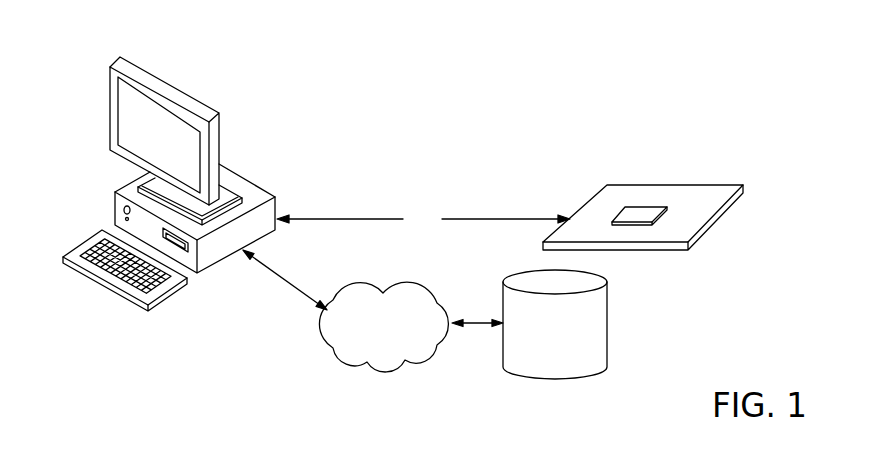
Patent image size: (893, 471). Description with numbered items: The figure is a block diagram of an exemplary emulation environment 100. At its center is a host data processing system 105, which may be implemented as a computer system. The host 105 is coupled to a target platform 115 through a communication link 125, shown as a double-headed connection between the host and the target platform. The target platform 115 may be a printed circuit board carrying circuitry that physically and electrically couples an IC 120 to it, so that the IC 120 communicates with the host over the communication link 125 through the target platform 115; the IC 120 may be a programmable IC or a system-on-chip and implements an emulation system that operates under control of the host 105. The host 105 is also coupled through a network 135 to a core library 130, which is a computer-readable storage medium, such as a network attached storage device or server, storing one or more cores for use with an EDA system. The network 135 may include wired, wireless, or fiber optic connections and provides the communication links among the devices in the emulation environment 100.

The emulation environment 100 is at (364, 58).
The host data processing system 105 is at (78, 186).
The target platform 115 is at (608, 195).
The IC 120 is at (638, 212).
The communication link 125 is at (423, 219).
The core library 130 is at (555, 324).
The network 135 is at (373, 311).